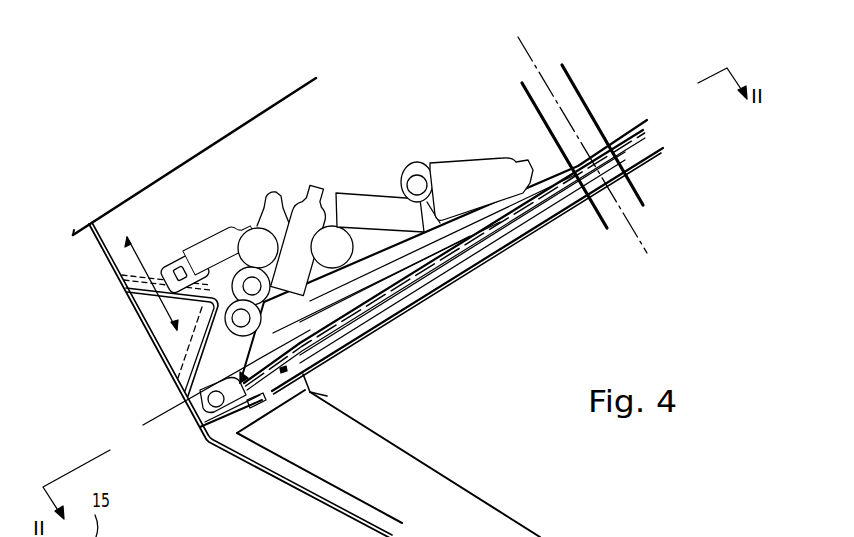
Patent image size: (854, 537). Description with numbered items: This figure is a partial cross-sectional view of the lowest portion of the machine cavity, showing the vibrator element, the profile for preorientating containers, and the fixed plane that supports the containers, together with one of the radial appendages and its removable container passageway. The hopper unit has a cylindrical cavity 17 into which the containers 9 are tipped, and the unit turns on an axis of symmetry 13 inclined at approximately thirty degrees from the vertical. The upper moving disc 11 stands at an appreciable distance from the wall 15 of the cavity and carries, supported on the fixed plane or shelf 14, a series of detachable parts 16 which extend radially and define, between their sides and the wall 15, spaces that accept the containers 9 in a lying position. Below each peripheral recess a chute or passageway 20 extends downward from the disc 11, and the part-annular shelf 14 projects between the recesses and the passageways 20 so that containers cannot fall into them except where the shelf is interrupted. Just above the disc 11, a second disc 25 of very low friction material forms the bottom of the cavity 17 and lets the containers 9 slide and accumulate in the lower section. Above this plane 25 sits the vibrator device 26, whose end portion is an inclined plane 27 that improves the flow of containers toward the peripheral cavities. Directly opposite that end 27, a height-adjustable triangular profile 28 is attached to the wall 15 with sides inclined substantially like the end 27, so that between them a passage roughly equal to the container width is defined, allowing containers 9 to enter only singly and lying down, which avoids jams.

The containers 9 is at (390, 208).
The upper moving disc 11 is at (477, 262).
The axis of symmetry 13 is at (573, 108).
The fixed plane or shelf 14 is at (200, 432).
The wall of the cavity 15 is at (97, 233).
The parts 16 is at (247, 404).
The cylindrical cavity 17 is at (342, 125).
The passageway 20 is at (430, 447).
The second disc 25 is at (640, 135).
The vibrator device 26 is at (382, 283).
The inclined plane 27 is at (265, 342).
The triangular profile 28 is at (210, 300).